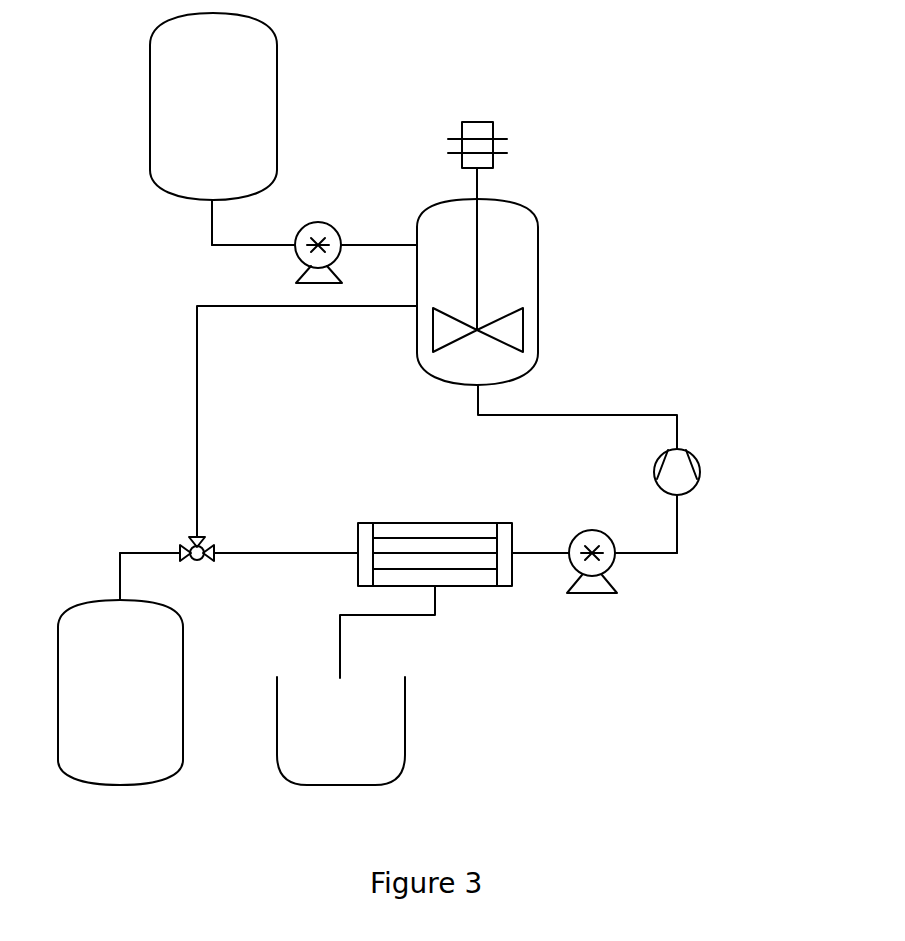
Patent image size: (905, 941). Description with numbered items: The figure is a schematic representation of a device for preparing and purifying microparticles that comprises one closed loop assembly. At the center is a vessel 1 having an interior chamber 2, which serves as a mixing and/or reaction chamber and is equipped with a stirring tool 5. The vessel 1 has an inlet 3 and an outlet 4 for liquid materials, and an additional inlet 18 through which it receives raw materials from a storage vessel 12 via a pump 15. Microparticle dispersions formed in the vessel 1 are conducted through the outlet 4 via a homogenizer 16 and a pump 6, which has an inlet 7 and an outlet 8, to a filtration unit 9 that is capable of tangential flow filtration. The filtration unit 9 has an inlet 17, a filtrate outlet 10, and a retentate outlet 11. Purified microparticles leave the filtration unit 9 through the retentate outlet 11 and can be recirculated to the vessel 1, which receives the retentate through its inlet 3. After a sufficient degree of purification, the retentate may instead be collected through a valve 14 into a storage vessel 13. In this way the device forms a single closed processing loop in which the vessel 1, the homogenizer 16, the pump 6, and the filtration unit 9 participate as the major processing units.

The vessel 1 is at (537, 200).
The interior chamber 2 is at (506, 260).
The inlet 3 is at (412, 313).
The outlet 4 is at (472, 392).
The stirring tool 5 is at (505, 322).
The pump 6 is at (617, 573).
The inlet 7 is at (620, 558).
The outlet 8 is at (563, 560).
The filtration unit 9 is at (445, 518).
The filtrate outlet 10 is at (438, 593).
The retentate outlet 11 is at (355, 548).
The storage vessel 12 is at (292, 75).
The storage vessel 13 is at (75, 600).
The valve 14 is at (182, 538).
The pump 15 is at (328, 212).
The homogenizer 16 is at (708, 462).
The inlet 17 is at (518, 547).
The additional inlet 18 is at (412, 240).